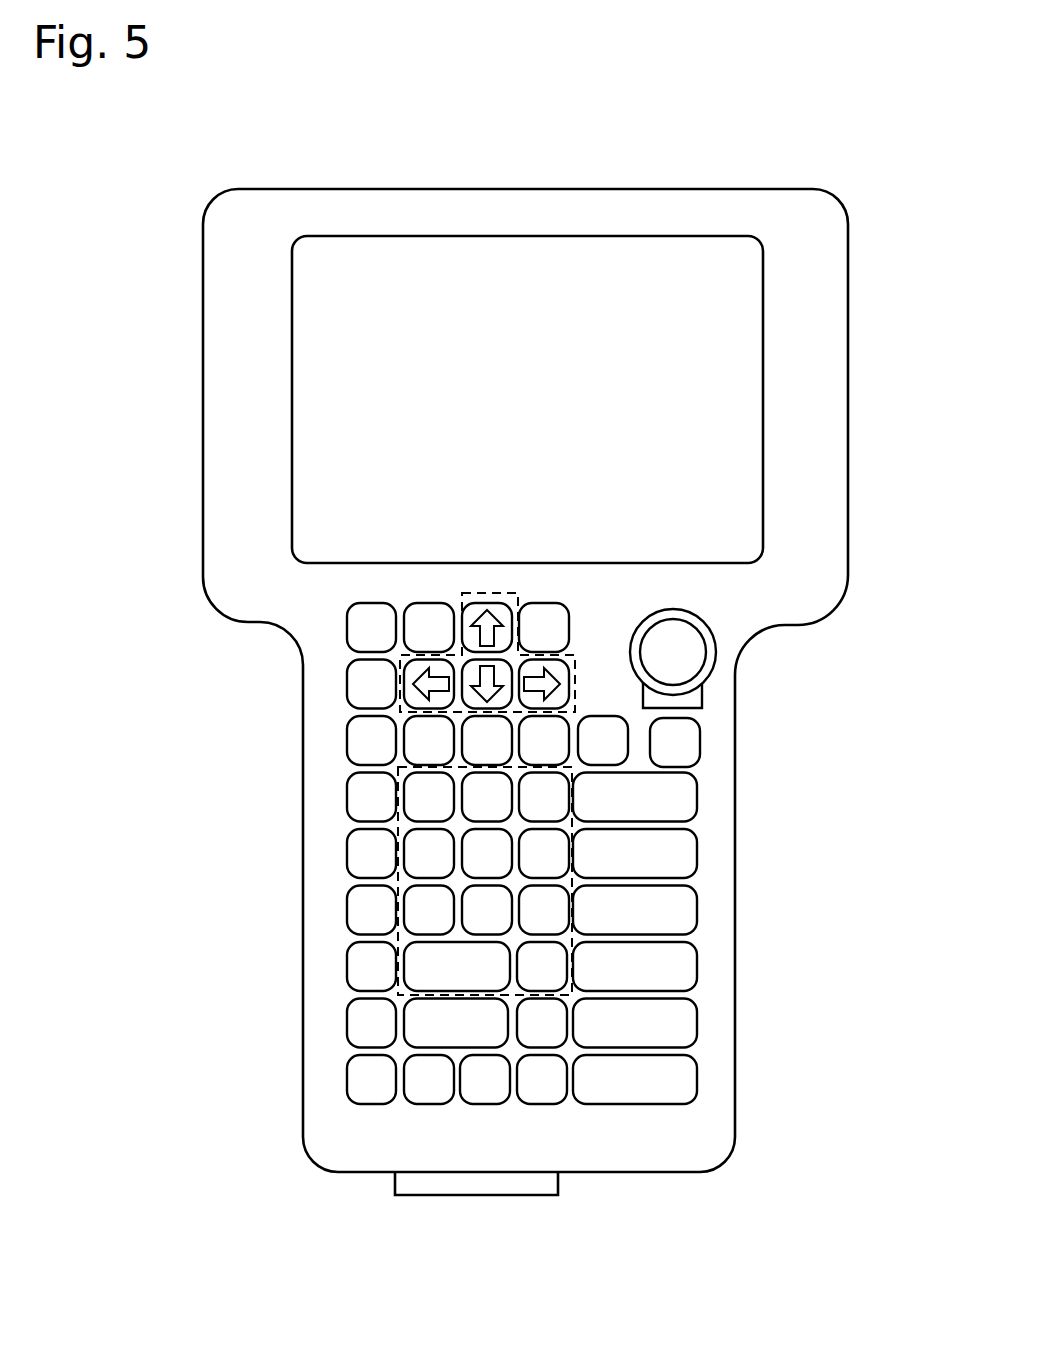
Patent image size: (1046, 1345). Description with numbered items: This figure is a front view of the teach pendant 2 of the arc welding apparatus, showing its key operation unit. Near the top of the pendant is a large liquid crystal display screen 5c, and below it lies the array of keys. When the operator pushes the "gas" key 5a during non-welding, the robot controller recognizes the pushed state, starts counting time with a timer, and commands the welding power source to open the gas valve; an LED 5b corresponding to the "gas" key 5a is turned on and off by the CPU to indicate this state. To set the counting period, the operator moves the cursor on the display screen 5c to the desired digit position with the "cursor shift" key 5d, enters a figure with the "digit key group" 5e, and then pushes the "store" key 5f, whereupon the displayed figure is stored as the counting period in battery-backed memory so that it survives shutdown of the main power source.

The teach pendant 2 is at (228, 195).
The "gas" key 5a is at (578, 775).
The LED 5b is at (490, 768).
The liquid crystal display screen 5c is at (662, 237).
The "cursor shift" key 5d is at (458, 600).
The "digit key group" 5e is at (400, 818).
The "store" key 5f is at (700, 750).